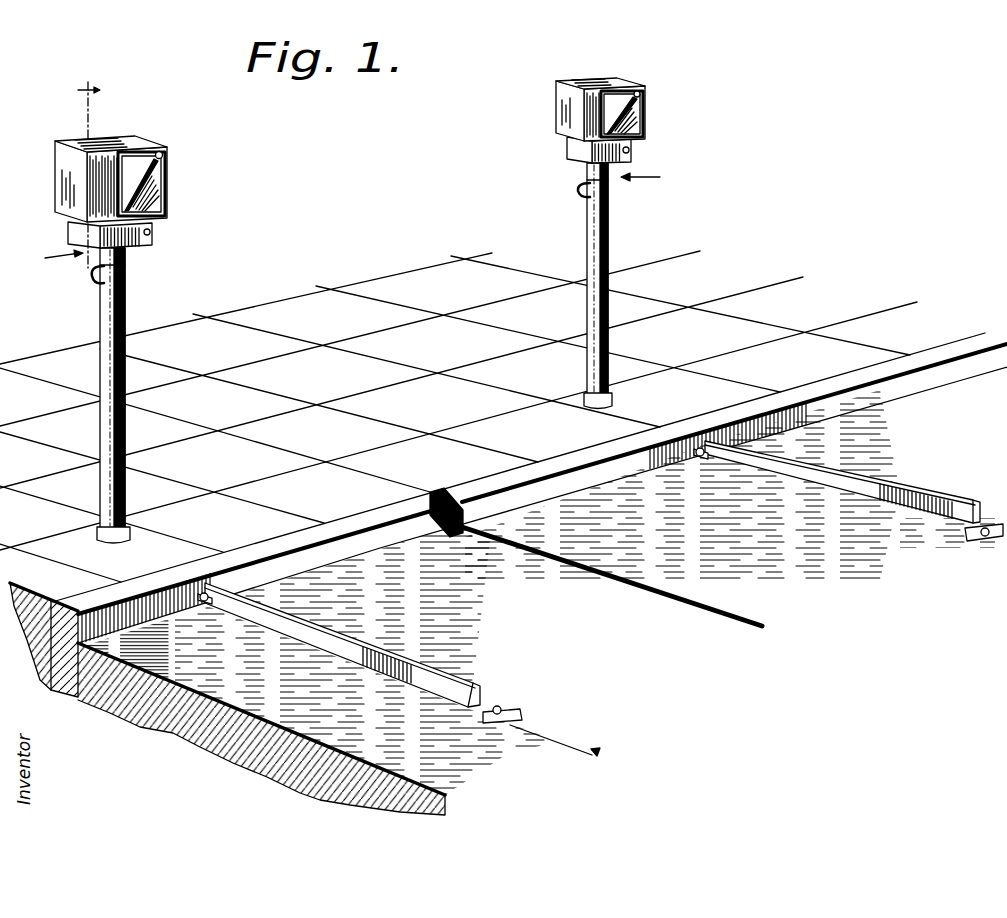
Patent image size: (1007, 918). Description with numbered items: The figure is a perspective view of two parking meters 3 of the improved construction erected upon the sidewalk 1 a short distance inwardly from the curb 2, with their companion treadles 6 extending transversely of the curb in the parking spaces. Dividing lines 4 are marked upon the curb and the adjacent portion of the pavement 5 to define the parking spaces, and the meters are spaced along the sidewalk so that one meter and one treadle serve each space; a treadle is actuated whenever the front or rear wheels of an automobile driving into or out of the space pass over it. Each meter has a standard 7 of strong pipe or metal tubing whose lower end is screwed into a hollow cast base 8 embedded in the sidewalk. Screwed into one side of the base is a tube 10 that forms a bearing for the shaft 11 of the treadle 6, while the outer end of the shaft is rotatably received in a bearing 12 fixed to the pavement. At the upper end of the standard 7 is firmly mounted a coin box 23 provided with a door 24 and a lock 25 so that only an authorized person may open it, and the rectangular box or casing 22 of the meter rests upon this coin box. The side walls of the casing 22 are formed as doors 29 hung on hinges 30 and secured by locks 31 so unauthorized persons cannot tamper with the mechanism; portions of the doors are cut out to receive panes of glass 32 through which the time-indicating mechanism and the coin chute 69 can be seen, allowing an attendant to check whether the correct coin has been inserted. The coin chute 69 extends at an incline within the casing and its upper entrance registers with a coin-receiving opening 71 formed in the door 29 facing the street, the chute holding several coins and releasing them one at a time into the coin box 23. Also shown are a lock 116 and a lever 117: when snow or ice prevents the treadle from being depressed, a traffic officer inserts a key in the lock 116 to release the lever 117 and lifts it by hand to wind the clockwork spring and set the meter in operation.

The sidewalk 1 is at (503, 447).
The curb 2 is at (345, 418).
The parking meter 3 is at (353, 217).
The dividing lines 4 is at (557, 558).
The pavement 5 is at (403, 558).
The treadle 6 is at (452, 676).
The standard 7 is at (126, 402).
The base 8 is at (130, 536).
The tube 10 is at (205, 606).
The shaft 11 is at (307, 640).
The bearing 12 is at (500, 705).
The casing 22 is at (133, 139).
The coin box 23 is at (78, 233).
The door 24 is at (133, 234).
The lock 25 is at (152, 231).
The doors 29 is at (112, 155).
The hinges 30 is at (82, 166).
The locks 31 is at (164, 181).
The panes of glass 32 is at (152, 194).
The coin chute 69 is at (167, 211).
The coin-receiving opening 71 is at (163, 151).
The lock 116 is at (112, 273).
The lever 117 is at (90, 280).